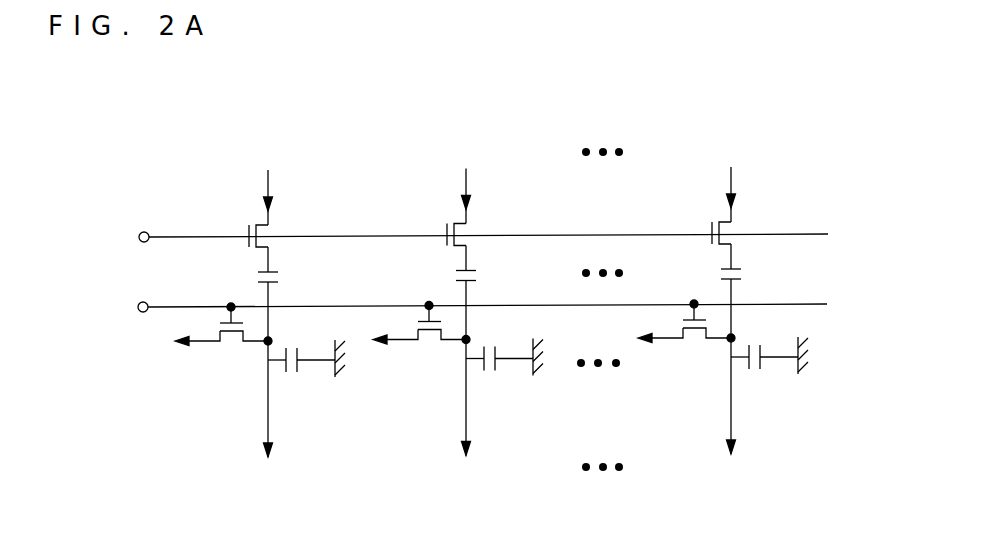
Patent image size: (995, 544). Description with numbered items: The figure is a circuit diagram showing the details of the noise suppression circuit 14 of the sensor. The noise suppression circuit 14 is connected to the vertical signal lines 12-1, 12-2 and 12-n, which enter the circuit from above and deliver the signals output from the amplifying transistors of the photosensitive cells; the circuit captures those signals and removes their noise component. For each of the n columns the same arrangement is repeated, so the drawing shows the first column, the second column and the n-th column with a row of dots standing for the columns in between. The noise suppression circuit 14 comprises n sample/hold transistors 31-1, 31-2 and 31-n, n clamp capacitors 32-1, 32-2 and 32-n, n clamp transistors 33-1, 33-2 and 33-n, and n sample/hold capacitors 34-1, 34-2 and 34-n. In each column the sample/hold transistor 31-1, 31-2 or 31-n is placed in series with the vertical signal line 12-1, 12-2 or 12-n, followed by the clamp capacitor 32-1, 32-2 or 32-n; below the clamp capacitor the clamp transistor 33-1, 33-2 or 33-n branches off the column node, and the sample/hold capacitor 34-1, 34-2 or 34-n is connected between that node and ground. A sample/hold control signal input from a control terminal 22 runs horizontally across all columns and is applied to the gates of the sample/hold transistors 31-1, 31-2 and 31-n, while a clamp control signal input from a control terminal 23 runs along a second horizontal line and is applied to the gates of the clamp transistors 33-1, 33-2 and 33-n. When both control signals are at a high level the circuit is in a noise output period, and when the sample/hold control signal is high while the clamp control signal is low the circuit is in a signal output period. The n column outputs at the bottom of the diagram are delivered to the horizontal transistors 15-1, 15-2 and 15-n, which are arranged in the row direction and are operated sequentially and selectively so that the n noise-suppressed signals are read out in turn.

The noise suppression circuit 14 is at (375, 152).
The vertical signal line 12-1 is at (265, 185).
The vertical signal line 12-2 is at (463, 184).
The vertical signal line 12-n is at (728, 182).
The control terminal 22 is at (138, 237).
The control terminal 23 is at (138, 307).
The sample/hold transistor 31-1 is at (262, 231).
The sample/hold transistor 31-2 is at (488, 224).
The sample/hold transistor 31-n is at (753, 222).
The clamp capacitor 32-1 is at (281, 277).
The clamp capacitor 32-2 is at (502, 276).
The clamp capacitor 32-n is at (767, 274).
The clamp transistor 33-1 is at (233, 343).
The clamp transistor 33-2 is at (419, 346).
The clamp transistor 33-n is at (684, 344).
The sample/hold capacitor 34-1 is at (292, 373).
The sample/hold capacitor 34-2 is at (502, 381).
The sample/hold capacitor 34-n is at (767, 379).
The horizontal transistor 15-1 is at (271, 395).
The horizontal transistor 15-2 is at (469, 394).
The horizontal transistor 15-n is at (734, 392).